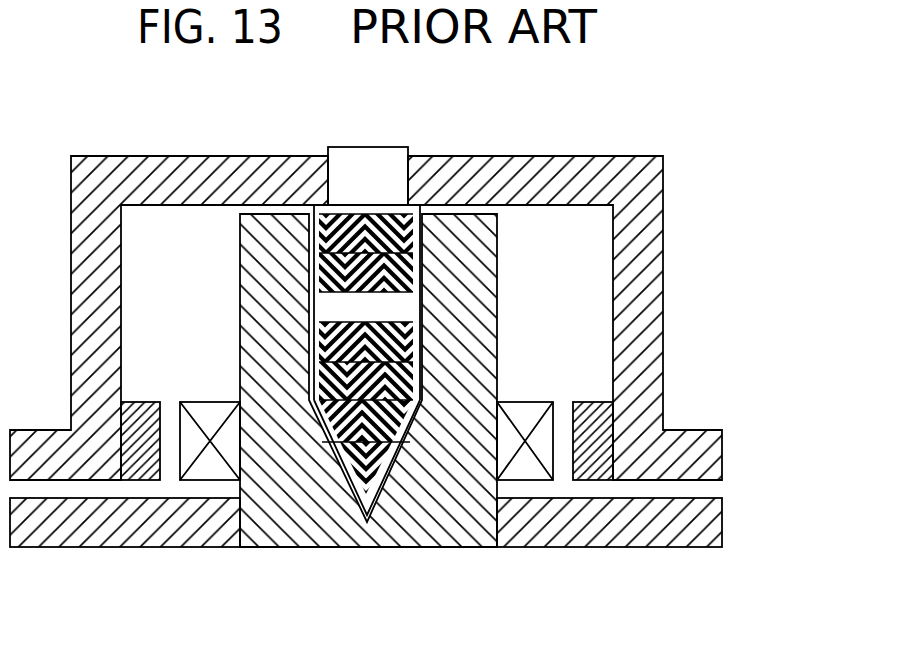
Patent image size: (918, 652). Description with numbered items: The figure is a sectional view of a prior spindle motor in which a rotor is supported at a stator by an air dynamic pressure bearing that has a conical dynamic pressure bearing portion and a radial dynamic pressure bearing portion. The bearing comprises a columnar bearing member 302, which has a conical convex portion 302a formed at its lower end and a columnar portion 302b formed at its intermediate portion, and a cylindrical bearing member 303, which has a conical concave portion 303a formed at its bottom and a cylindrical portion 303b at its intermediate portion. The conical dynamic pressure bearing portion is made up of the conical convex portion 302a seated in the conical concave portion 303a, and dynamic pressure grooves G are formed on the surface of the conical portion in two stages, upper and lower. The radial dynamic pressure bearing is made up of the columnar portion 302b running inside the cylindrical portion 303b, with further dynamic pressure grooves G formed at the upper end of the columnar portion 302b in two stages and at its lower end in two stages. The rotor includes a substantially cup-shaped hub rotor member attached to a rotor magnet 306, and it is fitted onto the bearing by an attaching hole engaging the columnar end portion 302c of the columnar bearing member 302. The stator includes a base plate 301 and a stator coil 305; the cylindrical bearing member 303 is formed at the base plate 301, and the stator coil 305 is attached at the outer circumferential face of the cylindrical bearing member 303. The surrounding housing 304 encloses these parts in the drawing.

The base plate 301 is at (703, 530).
The columnar bearing member 302 is at (332, 306).
The conical convex portion 302a is at (333, 450).
The columnar portion 302b is at (415, 311).
The columnar end portion 302c is at (372, 197).
The cylindrical bearing member 303 is at (252, 260).
The conical concave portion 303a is at (358, 486).
The cylindrical portion 303b is at (427, 347).
The housing / yoke 304 is at (553, 177).
The stator coil 305 is at (523, 462).
The rotor magnet 306 is at (595, 452).
The dynamic pressure grooves G is at (403, 277).